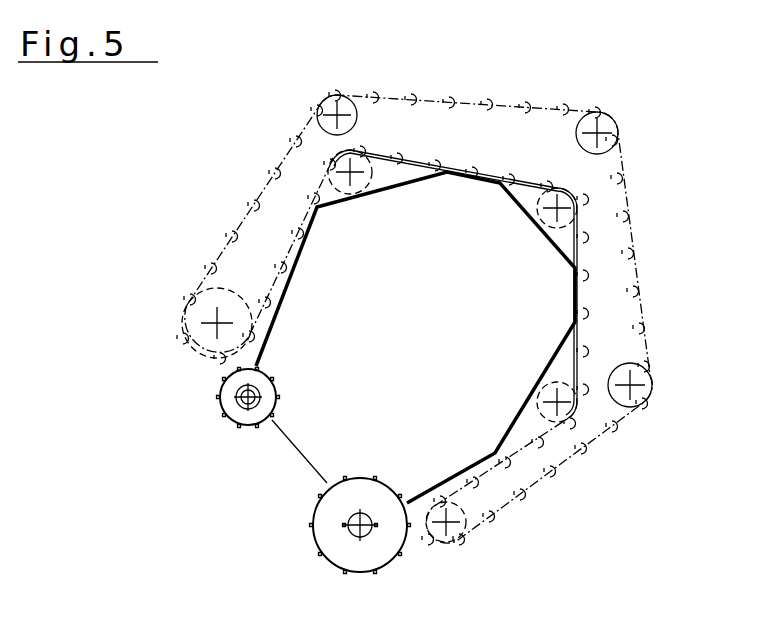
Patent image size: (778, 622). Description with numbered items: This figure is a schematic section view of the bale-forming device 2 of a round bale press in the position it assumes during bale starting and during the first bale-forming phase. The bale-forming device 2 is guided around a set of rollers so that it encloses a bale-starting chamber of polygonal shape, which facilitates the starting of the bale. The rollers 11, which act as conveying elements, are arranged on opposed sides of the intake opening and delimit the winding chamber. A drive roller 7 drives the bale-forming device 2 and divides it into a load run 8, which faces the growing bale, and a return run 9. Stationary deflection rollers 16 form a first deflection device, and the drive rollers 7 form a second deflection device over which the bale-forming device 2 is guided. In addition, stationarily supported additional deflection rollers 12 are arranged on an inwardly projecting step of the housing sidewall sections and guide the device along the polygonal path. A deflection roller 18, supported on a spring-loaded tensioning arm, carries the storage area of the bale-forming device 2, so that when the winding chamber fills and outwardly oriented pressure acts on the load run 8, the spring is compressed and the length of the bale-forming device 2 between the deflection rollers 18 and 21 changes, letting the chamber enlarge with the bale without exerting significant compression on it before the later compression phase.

The bale-forming device 2 is at (232, 222).
The drive roller 7 is at (192, 318).
The load run 8 is at (447, 178).
The return run 9 is at (500, 103).
The rollers 11 is at (232, 403).
The additional deflection rollers 12 is at (350, 195).
The deflection rollers 16 is at (450, 542).
The deflection roller 18 is at (612, 111).
The deflection rollers 21 is at (318, 97).